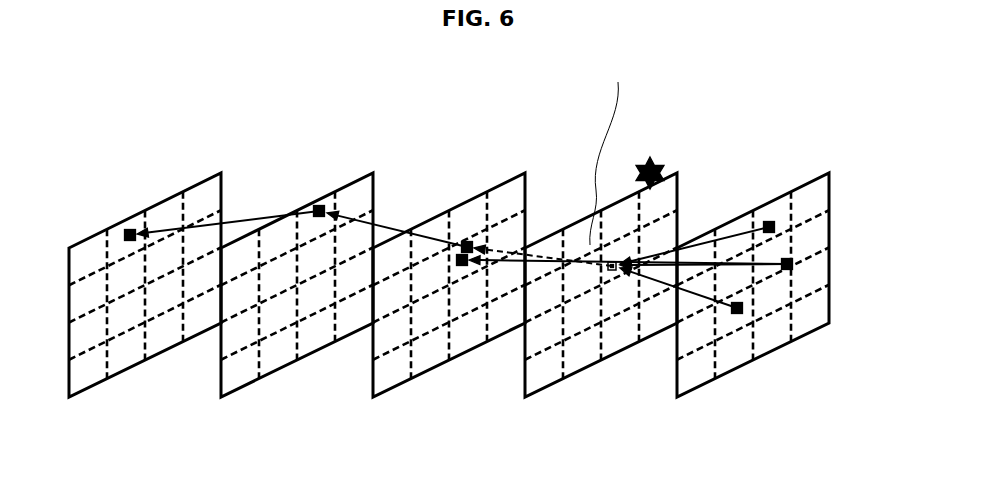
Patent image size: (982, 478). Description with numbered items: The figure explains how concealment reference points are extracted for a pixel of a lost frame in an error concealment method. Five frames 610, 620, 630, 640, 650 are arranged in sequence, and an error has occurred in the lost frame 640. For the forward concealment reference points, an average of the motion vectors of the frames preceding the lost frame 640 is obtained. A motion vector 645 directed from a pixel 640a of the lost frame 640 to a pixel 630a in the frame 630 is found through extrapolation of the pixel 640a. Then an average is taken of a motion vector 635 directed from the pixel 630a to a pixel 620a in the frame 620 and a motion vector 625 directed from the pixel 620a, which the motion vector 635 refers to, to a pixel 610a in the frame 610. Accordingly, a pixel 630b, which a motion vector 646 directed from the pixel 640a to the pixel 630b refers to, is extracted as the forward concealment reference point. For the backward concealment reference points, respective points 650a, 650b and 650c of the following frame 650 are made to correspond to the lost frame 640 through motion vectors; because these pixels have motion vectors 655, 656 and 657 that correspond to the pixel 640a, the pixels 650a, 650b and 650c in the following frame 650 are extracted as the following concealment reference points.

The frame 610 is at (145, 312).
The frame 620 is at (297, 312).
The frame 630 is at (449, 312).
The lost frame 640 is at (601, 253).
The following frame 650 is at (753, 312).
The pixel 610a is at (132, 230).
The pixel 620a is at (318, 212).
The motion vector 625 is at (225, 220).
The pixel 630a is at (458, 257).
The pixel 630b is at (462, 242).
The motion vector 635 is at (397, 216).
The pixel 640a is at (617, 258).
The motion vector 645 is at (515, 252).
The motion vector 646 is at (550, 268).
The pixel 650a is at (776, 227).
The pixel 650b is at (795, 262).
The pixel 650c is at (745, 306).
The motion vector 655 is at (690, 237).
The motion vector 656 is at (715, 243).
The motion vector 657 is at (680, 320).